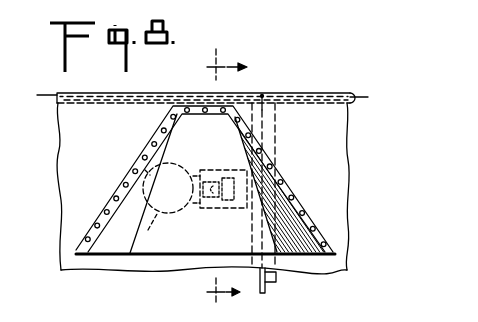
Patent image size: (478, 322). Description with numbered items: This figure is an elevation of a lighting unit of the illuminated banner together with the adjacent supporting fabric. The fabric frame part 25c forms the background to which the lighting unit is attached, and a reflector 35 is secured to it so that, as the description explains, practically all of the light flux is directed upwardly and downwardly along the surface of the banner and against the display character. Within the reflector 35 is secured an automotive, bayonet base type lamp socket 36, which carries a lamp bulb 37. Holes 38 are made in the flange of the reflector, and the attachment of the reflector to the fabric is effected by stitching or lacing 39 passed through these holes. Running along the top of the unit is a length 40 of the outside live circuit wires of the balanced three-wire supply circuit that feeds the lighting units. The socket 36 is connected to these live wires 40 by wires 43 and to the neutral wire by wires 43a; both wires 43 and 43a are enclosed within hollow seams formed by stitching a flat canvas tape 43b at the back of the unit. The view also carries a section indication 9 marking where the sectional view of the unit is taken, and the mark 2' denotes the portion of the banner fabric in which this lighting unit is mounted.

The body / housing section 2' is at (175, 138).
The section line 9- 9 is at (265, 71).
The fabric frame part 25c is at (283, 184).
The reflector 35 is at (172, 207).
The lamp socket 36 is at (240, 209).
The lamp bulb 37 is at (154, 210).
The holes 38 is at (125, 183).
The stitching or lacing 39 is at (109, 201).
The length of outside circuit wires 40 is at (365, 93).
The wires 43 is at (266, 118).
The wires 43a is at (265, 293).
The flat canvas tape 43b is at (277, 277).